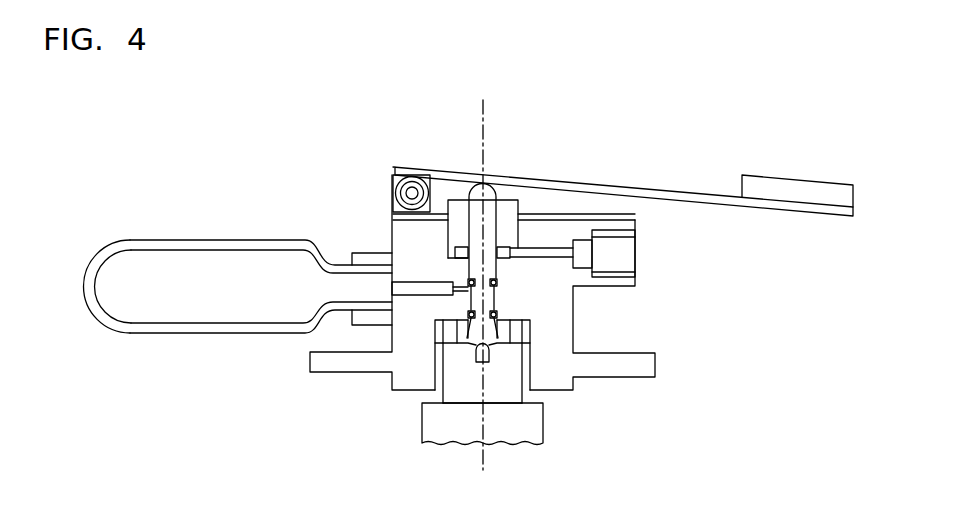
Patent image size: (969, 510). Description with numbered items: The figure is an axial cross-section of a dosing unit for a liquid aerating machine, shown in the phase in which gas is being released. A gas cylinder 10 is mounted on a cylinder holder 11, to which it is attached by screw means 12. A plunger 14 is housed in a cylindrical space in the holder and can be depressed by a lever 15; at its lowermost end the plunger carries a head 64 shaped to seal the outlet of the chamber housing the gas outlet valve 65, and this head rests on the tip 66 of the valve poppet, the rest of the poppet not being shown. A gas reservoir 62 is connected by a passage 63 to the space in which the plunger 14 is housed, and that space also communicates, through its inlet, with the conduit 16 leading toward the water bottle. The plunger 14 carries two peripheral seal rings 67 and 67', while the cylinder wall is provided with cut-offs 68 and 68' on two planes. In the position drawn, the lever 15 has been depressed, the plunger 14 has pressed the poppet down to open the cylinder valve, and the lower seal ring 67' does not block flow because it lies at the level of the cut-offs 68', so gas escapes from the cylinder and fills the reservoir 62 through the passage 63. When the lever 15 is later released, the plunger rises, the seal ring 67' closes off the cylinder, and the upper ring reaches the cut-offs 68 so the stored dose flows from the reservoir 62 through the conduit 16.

The gas cylinder 10 is at (518, 435).
The cylinder holder 11 is at (662, 367).
The screw means 12 is at (443, 328).
The plunger 14 is at (488, 193).
The lever 15 is at (803, 186).
The conduit 16 is at (545, 256).
The gas reservoir 62 is at (138, 265).
The passage 63 is at (418, 290).
The head 64 is at (495, 338).
The chamber housing the gas outlet valve 65 is at (510, 358).
The tip of valve poppet 66 is at (486, 360).
The peripheral seal ring 67 is at (409, 227).
The cut-offs 68 is at (432, 208).
The peripheral seal ring 67' is at (432, 396).
The cut-offs 68' is at (415, 378).